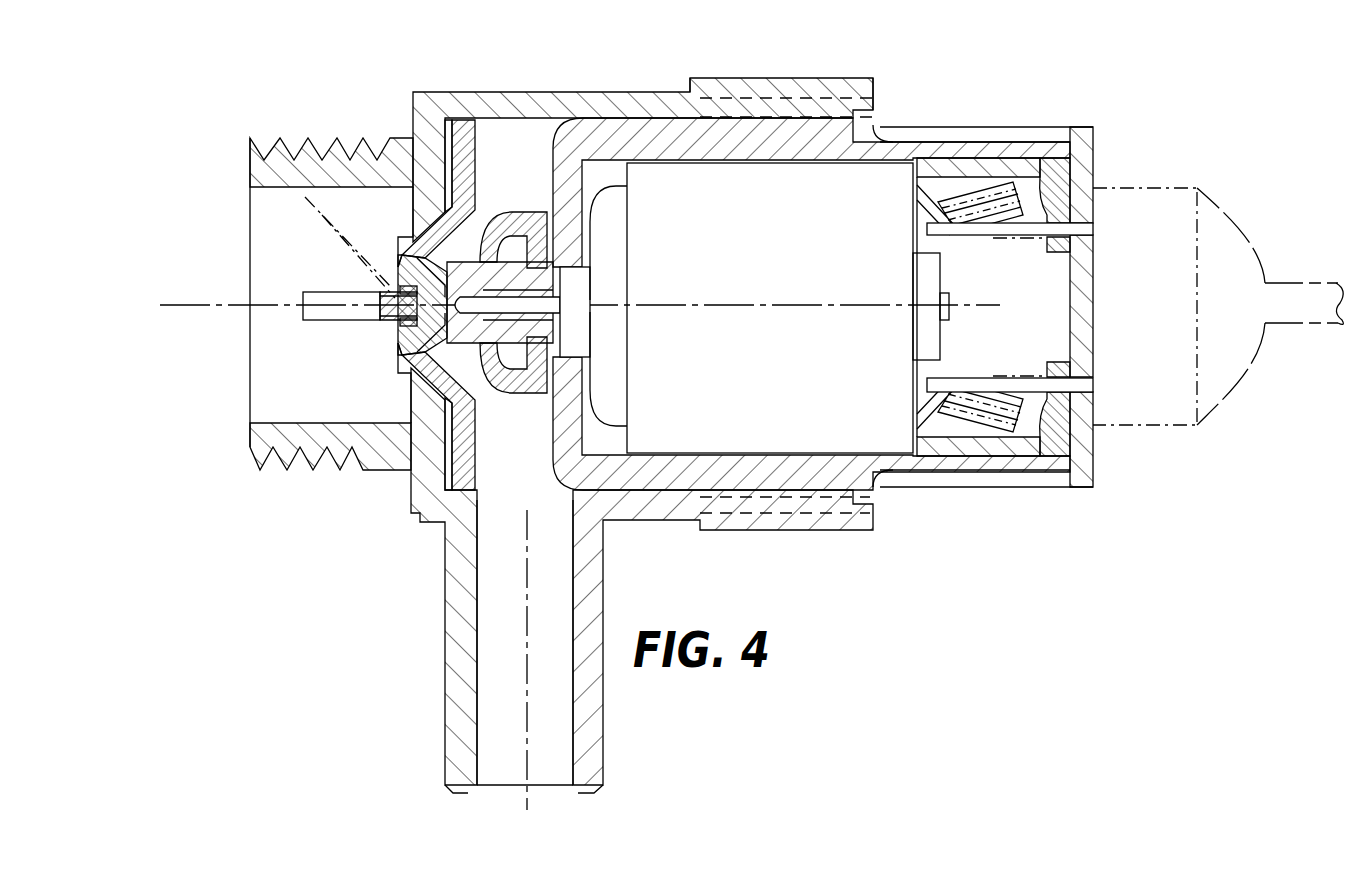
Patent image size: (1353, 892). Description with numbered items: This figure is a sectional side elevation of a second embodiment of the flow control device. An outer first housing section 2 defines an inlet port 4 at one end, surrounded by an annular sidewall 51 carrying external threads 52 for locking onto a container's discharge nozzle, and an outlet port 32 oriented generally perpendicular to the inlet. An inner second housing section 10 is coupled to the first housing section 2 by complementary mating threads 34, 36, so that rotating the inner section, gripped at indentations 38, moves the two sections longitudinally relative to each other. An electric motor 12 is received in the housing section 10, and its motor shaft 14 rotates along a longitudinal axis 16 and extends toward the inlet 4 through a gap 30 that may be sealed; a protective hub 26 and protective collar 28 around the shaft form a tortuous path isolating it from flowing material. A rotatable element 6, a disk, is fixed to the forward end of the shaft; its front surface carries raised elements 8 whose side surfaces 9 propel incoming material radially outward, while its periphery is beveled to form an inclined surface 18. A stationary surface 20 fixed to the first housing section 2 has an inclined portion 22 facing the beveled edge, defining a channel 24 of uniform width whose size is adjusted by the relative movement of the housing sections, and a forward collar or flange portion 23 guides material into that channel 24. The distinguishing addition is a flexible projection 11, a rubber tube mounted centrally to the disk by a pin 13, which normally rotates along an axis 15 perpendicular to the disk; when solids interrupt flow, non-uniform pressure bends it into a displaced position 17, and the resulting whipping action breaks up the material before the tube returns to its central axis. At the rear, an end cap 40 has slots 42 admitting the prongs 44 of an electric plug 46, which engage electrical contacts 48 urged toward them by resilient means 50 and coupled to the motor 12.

The first housing section 2 is at (437, 88).
The inlet port 4 is at (250, 288).
The rotatable element 6 is at (395, 332).
The raised elements 8 is at (420, 337).
The side surfaces 9 is at (392, 296).
The second housing section 10 is at (560, 120).
The projection 11 is at (228, 352).
The electric motor 12 is at (607, 220).
The pin 13 is at (376, 322).
The motor shaft 14 is at (527, 240).
The axis 15 is at (190, 307).
The longitudinal axis 16 is at (820, 300).
The displaced position 17 is at (313, 160).
The inclined surface 18 is at (440, 230).
The stationary surface 20 is at (502, 132).
The inclined portion 22 is at (448, 195).
The collar or flange portion 23 is at (400, 262).
The channel 24 is at (456, 250).
The protective hub 26 is at (585, 355).
The protective collar 28 is at (592, 376).
The gap 30 is at (578, 285).
The outlet port 32 is at (551, 757).
The mating threads 34 is at (827, 122).
The mating threads 36 is at (786, 100).
The indentations 38 is at (950, 135).
The end cap 40 is at (1093, 140).
The slots 42 is at (1093, 215).
The prongs 44 is at (990, 245).
The electric plug 46 is at (1258, 255).
The electrical contacts 48 is at (1037, 180).
The resilient means 50 is at (988, 180).
The annular sidewall 51 is at (262, 447).
The threads 52 is at (302, 468).